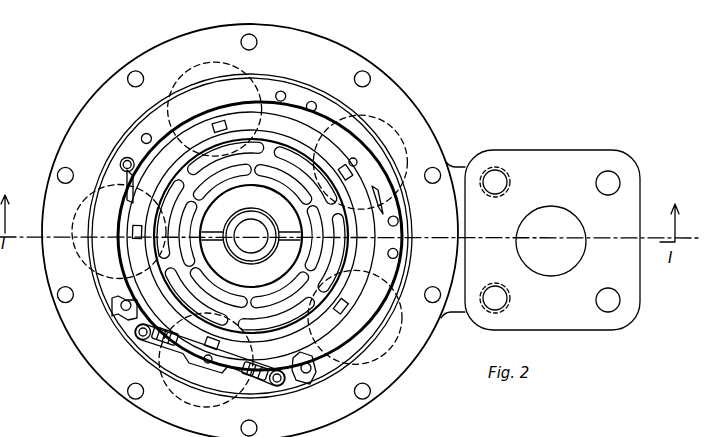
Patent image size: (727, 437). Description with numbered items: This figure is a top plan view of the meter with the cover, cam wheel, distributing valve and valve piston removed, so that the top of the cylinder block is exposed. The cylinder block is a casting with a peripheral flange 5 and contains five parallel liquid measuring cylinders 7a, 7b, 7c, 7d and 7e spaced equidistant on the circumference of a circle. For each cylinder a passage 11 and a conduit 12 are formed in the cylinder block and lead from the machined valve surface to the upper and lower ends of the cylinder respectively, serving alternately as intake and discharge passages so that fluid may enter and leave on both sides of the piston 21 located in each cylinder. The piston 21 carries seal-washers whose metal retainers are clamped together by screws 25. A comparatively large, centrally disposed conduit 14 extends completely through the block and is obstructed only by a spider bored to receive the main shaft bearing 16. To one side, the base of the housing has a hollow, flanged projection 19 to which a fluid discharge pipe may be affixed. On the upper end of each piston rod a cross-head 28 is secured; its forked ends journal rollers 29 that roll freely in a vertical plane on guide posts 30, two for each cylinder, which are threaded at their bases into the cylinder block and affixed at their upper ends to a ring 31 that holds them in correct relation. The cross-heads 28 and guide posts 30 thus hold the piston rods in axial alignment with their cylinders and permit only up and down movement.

The peripheral flange 5 is at (332, 48).
The liquid measuring cylinder 7a is at (87, 212).
The liquid measuring cylinder 7b is at (193, 70).
The liquid measuring cylinder 7c is at (383, 125).
The liquid measuring cylinder 7d is at (377, 352).
The liquid measuring cylinder 7e is at (177, 385).
The passage 11 is at (192, 163).
The conduit 12 is at (133, 193).
The centrally disposed conduit 14 is at (250, 236).
The main shaft bearing 16 is at (256, 212).
The hollow flanged projection 19 is at (630, 158).
The piston 21 is at (522, 433).
The screw 25 is at (467, 432).
The cross-head 28 is at (133, 332).
The roller 29 is at (150, 342).
The guide post 30 is at (123, 157).
The ring 31 is at (115, 292).